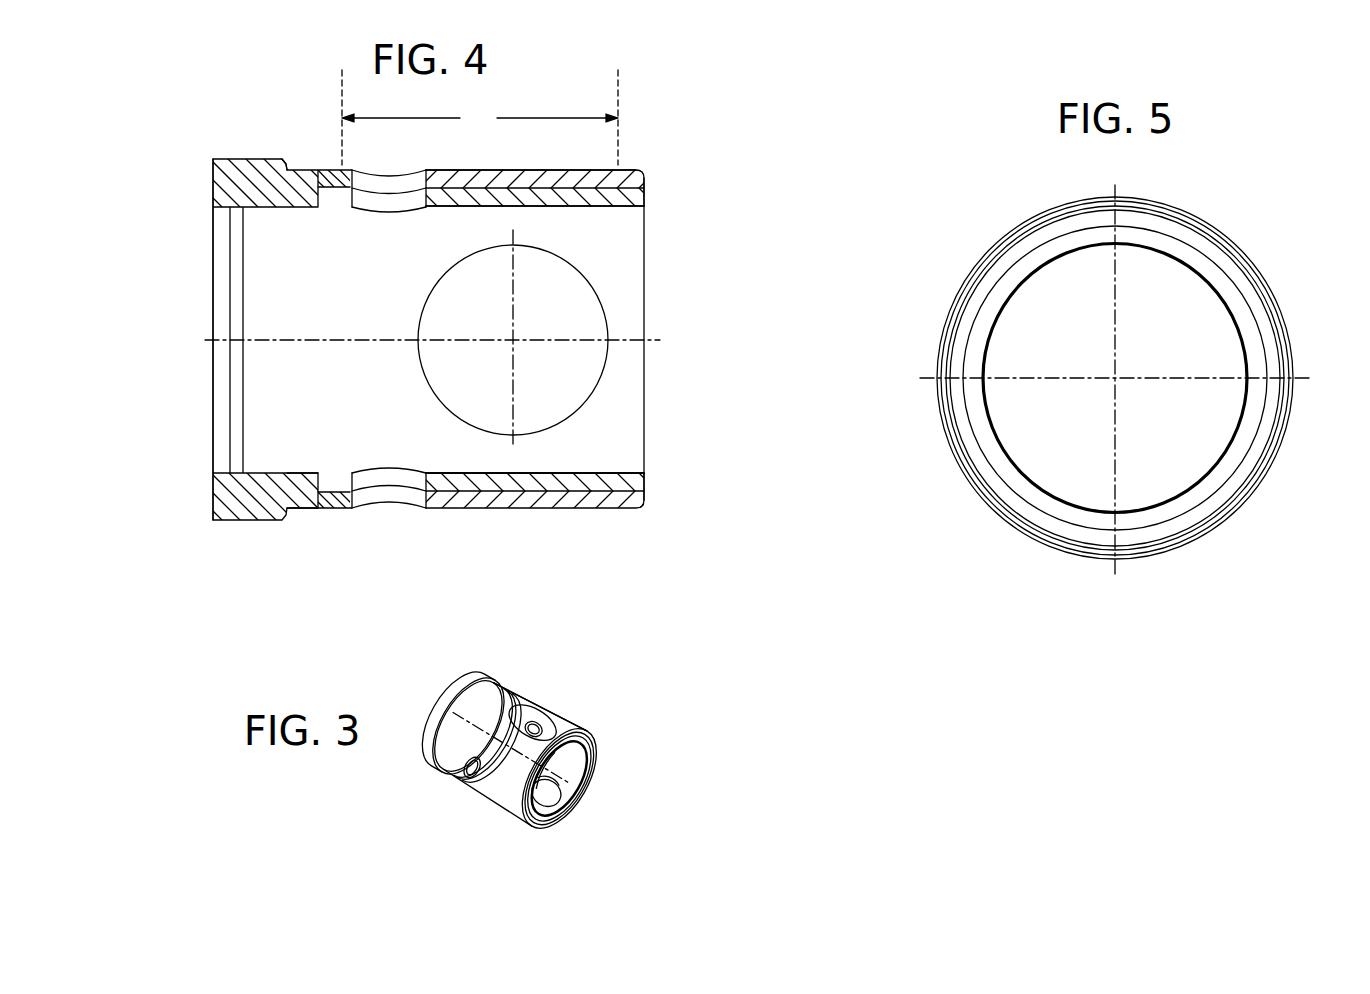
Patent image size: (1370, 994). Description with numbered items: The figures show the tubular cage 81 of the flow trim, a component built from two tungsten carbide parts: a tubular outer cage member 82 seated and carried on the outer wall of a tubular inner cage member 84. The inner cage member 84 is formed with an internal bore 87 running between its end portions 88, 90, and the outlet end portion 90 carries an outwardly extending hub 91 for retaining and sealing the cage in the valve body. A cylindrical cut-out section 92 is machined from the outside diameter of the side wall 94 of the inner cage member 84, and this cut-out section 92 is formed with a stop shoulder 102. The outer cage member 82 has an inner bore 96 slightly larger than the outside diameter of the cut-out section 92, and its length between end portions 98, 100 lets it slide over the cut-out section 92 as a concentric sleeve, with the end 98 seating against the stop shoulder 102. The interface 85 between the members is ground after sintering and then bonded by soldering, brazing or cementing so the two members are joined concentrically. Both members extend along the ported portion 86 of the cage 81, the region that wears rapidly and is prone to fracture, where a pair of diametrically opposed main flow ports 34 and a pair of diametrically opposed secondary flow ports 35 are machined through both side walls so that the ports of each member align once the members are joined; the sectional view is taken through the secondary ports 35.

In FIG. 4, the main flow port 34 is at (571, 264).
In FIG. 3, the main flow port 34 is at (556, 710).
In FIG. 4, the secondary flow port 35 is at (372, 208).
In FIG. 3, the secondary flow port 35 is at (458, 729).
In FIG. 4, the cage 81 is at (660, 150).
In FIG. 5, the cage 81 is at (968, 530).
In FIG. 3, the cage 81 is at (412, 790).
In FIG. 4, the outer cage member 82 is at (647, 178).
In FIG. 5, the outer cage member 82 is at (1240, 477).
In FIG. 3, the outer cage member 82 is at (516, 700).
In FIG. 4, the inner cage member 84 is at (647, 200).
In FIG. 5, the inner cage member 84 is at (1163, 513).
In FIG. 3, the inner cage member 84 is at (598, 740).
In FIG. 4, the interface 85 is at (573, 492).
In FIG. 5, the interface 85 is at (1263, 343).
In FIG. 3, the interface 85 is at (602, 757).
In FIG. 4, the ported portion 86 is at (480, 117).
In FIG. 4, the internal bore 87 is at (628, 472).
In FIG. 5, the internal bore 87 is at (1060, 492).
In FIG. 3, the internal bore 87 is at (590, 768).
In FIG. 4, the end portion 88 is at (645, 479).
In FIG. 3, the end portion 88 is at (586, 798).
In FIG. 4, the end portion 90 is at (213, 496).
In FIG. 3, the end portion 90 is at (462, 683).
In FIG. 4, the hub 91 is at (232, 162).
In FIG. 5, the hub 91 is at (1290, 436).
In FIG. 3, the hub 91 is at (487, 680).
In FIG. 4, the cut-out section 92 is at (461, 474).
In FIG. 4, the side wall 94 is at (297, 507).
In FIG. 4, the inner bore 96 is at (542, 474).
In FIG. 4, the end portion 98 is at (320, 508).
In FIG. 3, the end portion 98 is at (462, 785).
In FIG. 4, the end portion 100 is at (645, 508).
In FIG. 3, the end portion 100 is at (534, 824).
In FIG. 4, the stop shoulder 102 is at (333, 168).